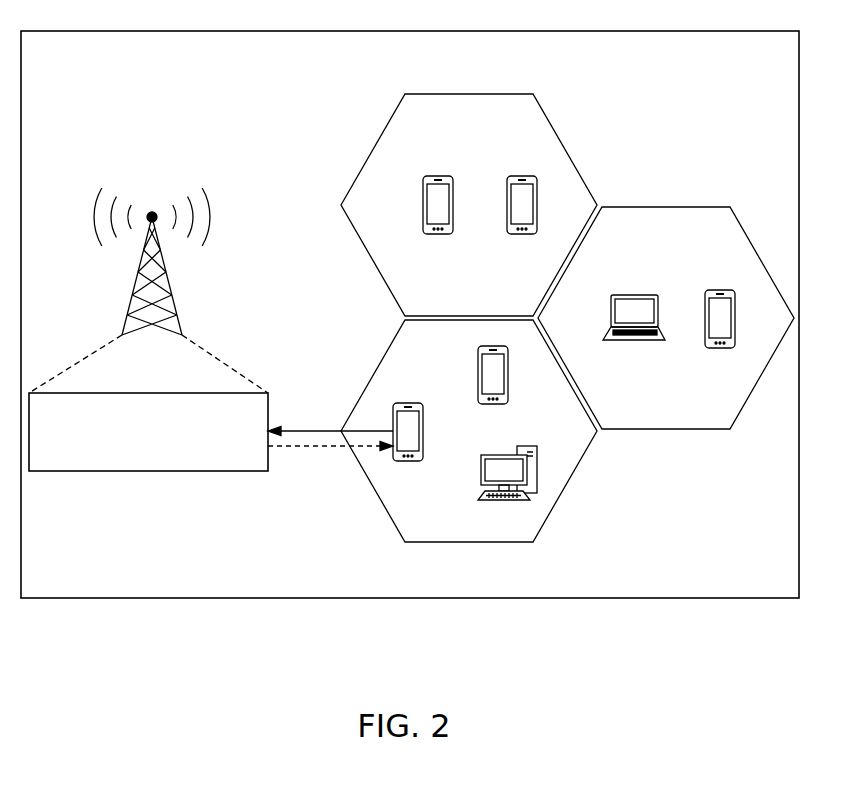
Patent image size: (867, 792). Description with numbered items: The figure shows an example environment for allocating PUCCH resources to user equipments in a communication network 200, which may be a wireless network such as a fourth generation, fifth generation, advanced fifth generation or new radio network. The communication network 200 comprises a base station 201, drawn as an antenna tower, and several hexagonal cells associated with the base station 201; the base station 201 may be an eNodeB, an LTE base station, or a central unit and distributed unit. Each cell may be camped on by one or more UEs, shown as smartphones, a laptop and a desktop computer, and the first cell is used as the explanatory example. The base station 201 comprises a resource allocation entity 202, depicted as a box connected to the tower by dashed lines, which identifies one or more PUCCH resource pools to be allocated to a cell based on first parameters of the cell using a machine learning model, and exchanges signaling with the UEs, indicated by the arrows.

The communication network 200 is at (727, 31).
The base station 201 is at (152, 212).
The resource allocation entity 202 is at (193, 460).